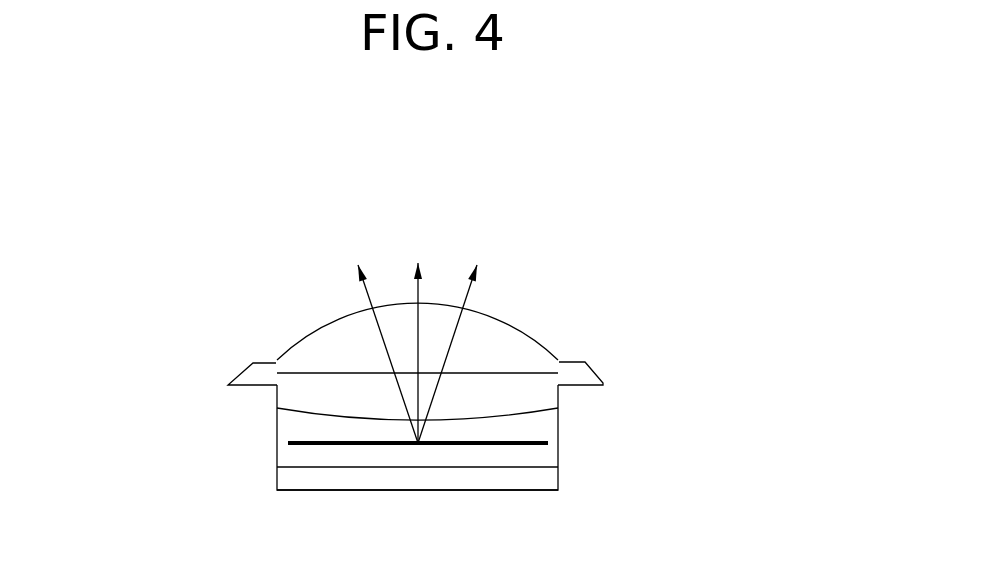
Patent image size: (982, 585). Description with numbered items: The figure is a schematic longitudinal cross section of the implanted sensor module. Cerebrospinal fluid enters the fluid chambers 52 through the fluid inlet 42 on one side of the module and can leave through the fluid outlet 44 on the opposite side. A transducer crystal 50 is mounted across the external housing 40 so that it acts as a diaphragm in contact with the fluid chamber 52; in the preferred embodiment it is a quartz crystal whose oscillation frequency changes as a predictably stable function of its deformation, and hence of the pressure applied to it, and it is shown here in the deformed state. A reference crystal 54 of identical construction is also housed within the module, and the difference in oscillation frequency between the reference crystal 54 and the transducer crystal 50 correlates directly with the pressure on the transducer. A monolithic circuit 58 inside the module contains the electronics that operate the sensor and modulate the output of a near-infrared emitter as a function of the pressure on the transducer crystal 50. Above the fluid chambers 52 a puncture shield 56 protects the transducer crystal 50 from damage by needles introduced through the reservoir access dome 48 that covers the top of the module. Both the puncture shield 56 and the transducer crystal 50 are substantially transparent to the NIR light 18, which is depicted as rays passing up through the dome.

The NIR light 18 is at (408, 304).
The external housing 40 is at (453, 502).
The fluid inlet 42 is at (233, 373).
The fluid outlet 44 is at (607, 373).
The reservoir access dome 48 is at (485, 340).
The transducer crystal 50 is at (510, 420).
The fluid chambers 52 is at (327, 348).
The reference crystal 54 is at (528, 469).
The puncture shield 56 is at (360, 363).
The monolithic circuit 58 is at (552, 445).